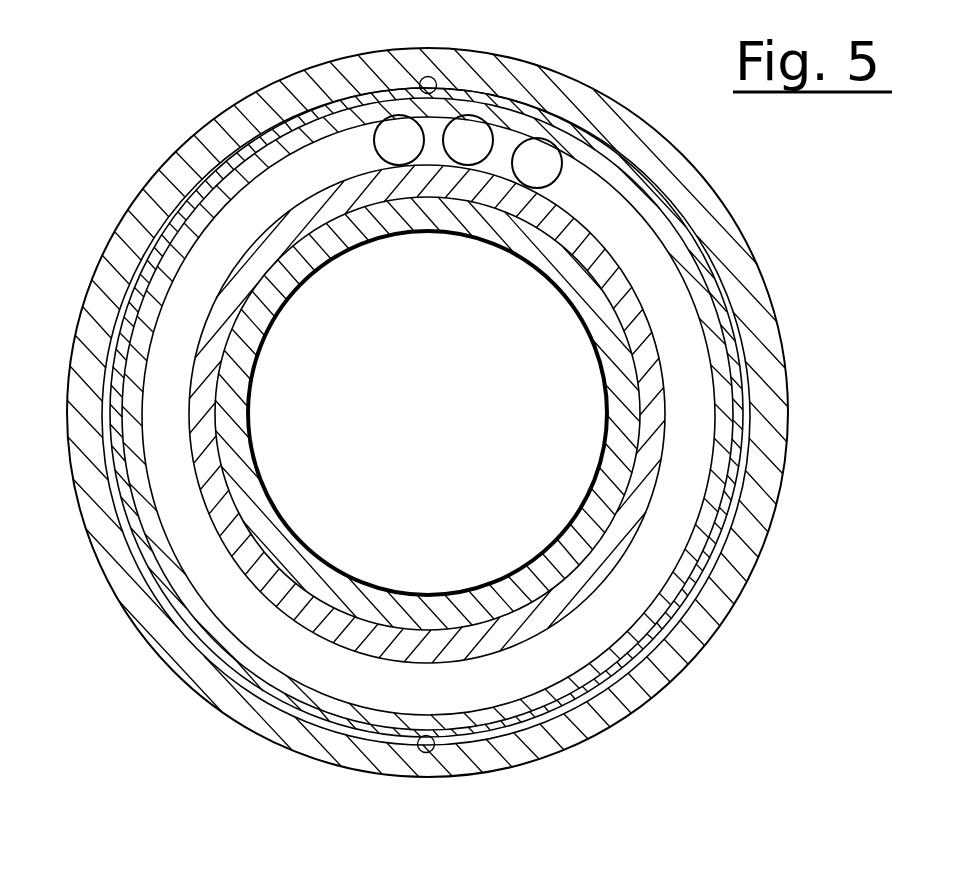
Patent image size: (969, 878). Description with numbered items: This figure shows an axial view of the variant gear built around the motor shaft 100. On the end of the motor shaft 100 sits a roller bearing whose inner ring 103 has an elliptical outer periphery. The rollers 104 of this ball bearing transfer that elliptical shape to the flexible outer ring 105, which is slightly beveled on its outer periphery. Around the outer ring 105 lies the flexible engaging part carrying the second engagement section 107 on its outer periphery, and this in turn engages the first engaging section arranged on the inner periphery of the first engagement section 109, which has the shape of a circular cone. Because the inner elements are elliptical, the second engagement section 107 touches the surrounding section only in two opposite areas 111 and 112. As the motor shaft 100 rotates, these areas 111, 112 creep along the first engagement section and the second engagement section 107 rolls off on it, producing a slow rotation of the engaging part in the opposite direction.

The motor shaft 100 is at (456, 214).
The inner ring 103 is at (297, 230).
The rollers 104 is at (466, 150).
The outer ring 105 is at (214, 197).
The second engagement section 107 is at (173, 222).
The first engagement section 109 is at (104, 273).
The contact area 111 is at (426, 77).
The contact area 112 is at (428, 752).